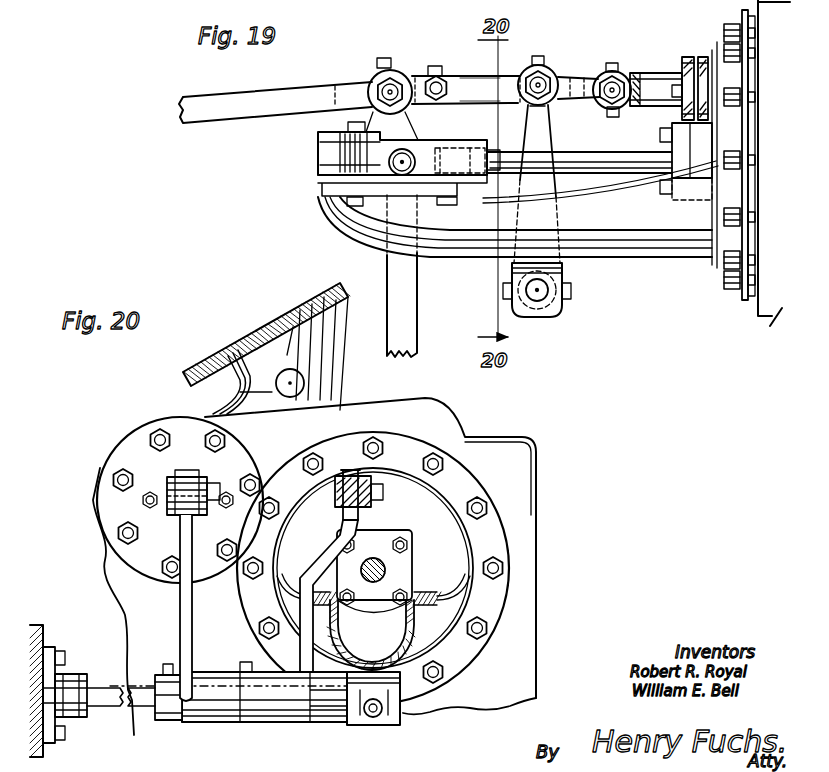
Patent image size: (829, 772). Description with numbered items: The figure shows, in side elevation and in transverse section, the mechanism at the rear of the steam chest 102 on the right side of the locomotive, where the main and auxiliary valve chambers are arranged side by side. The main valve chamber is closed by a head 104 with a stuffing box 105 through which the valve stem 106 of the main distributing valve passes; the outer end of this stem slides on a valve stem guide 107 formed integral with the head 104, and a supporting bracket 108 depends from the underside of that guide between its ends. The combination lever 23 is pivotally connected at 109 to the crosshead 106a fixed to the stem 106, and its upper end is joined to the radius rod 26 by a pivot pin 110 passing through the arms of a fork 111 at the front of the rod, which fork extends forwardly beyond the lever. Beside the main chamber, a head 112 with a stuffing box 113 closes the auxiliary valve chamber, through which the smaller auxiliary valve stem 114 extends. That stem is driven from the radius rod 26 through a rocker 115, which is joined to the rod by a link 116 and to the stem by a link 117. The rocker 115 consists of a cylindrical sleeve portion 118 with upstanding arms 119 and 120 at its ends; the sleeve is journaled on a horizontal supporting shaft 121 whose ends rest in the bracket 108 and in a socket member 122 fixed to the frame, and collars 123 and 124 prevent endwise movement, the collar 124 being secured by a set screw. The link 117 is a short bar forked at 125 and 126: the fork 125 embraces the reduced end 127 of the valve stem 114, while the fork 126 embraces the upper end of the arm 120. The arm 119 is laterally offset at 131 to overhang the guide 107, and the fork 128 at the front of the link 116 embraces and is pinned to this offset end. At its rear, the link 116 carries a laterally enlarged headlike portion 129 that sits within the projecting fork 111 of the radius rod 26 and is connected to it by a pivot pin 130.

In FIG. 19, the combination lever 23 is at (403, 352).
In FIG. 19, the radius rod 26 is at (186, 124).
In FIG. 19, the steam chest 102 is at (773, 176).
In FIG. 20, the steam chest 102 is at (465, 440).
In FIG. 19, the head 104 is at (741, 24).
In FIG. 20, the head 104 is at (505, 597).
In FIG. 19, the stuffing box 105 is at (680, 145).
In FIG. 20, the stuffing box 105 is at (408, 557).
In FIG. 19, the valve stem 106 is at (571, 152).
In FIG. 20, the valve stem 106 is at (387, 573).
In FIG. 19, the crosshead 106a is at (463, 144).
In FIG. 19, the valve stem guide 107 is at (611, 256).
In FIG. 20, the valve stem guide 107 is at (440, 640).
In FIG. 19, the supporting bracket 108 is at (562, 268).
In FIG. 20, the supporting bracket 108 is at (393, 726).
In FIG. 19, the pivotal connection 109 is at (408, 156).
In FIG. 19, the pivot pin 110 is at (372, 86).
In FIG. 19, the fork 111 is at (415, 76).
In FIG. 20, the head 112 is at (135, 447).
In FIG. 19, the stuffing box 113 is at (704, 58).
In FIG. 20, the stuffing box 113 is at (162, 512).
In FIG. 19, the valve stem 114 is at (638, 77).
In FIG. 20, the rocker 115 is at (199, 723).
In FIG. 19, the link 116 is at (465, 83).
In FIG. 20, the link 116 is at (340, 496).
In FIG. 19, the link 117 is at (574, 79).
In FIG. 20, the cylindrical sleeve portion 118 is at (250, 723).
In FIG. 19, the arm 119 is at (549, 113).
In FIG. 20, the arm 119 is at (338, 553).
In FIG. 20, the arm 120 is at (180, 633).
In FIG. 19, the supporting shaft 121 is at (538, 300).
In FIG. 20, the supporting shaft 121 is at (109, 710).
In FIG. 20, the socket member 122 is at (69, 674).
In FIG. 20, the collar 123 is at (325, 722).
In FIG. 20, the collar 124 is at (163, 720).
In FIG. 19, the fork 125 is at (620, 121).
In FIG. 20, the fork 126 is at (198, 477).
In FIG. 19, the reduced end 127 is at (619, 72).
In FIG. 19, the fork 128 is at (546, 66).
In FIG. 20, the fork 128 is at (372, 513).
In FIG. 19, the headlike portion 129 is at (444, 74).
In FIG. 19, the pivot pin 130 is at (438, 64).
In FIG. 20, the laterally offset upper end 131 is at (343, 518).